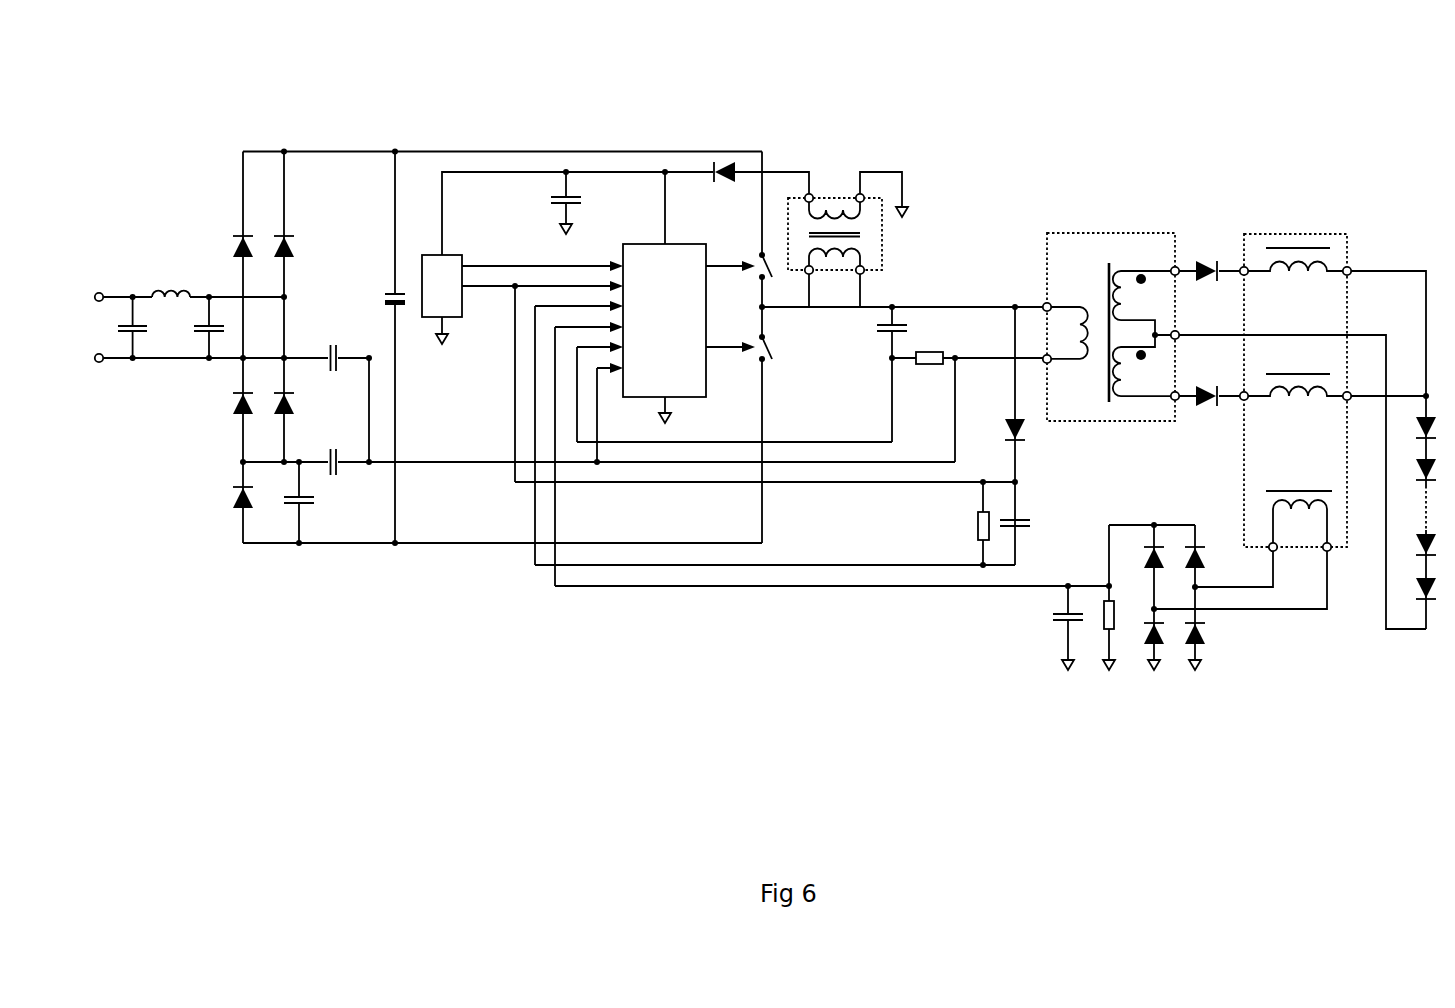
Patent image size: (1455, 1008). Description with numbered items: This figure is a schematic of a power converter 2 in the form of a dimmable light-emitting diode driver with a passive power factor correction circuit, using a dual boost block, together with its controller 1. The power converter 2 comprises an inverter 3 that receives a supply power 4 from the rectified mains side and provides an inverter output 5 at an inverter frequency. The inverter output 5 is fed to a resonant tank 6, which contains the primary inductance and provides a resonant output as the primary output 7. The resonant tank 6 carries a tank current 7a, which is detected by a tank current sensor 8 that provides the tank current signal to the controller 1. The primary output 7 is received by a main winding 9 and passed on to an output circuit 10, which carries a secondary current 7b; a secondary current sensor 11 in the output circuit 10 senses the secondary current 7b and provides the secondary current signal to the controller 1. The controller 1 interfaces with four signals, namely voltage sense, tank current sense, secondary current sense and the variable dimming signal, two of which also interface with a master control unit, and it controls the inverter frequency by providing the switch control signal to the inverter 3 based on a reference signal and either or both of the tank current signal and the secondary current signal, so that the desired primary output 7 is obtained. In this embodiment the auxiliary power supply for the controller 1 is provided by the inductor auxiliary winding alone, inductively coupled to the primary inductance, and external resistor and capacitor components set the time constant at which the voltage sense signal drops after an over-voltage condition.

The controller 1 is at (608, 379).
The power converter 2 is at (1269, 83).
The inverter 3 is at (795, 357).
The supply power 4 is at (447, 137).
The inverter output 5 is at (802, 318).
The resonant tank 6 is at (904, 270).
The primary output 7 is at (1032, 278).
The tank current 7a is at (1041, 387).
The secondary current 7b is at (1236, 538).
The tank current sensor 8 is at (920, 395).
The main winding 9 is at (1099, 311).
The output circuit 10 is at (1378, 197).
The secondary current sensor 11 is at (1307, 655).